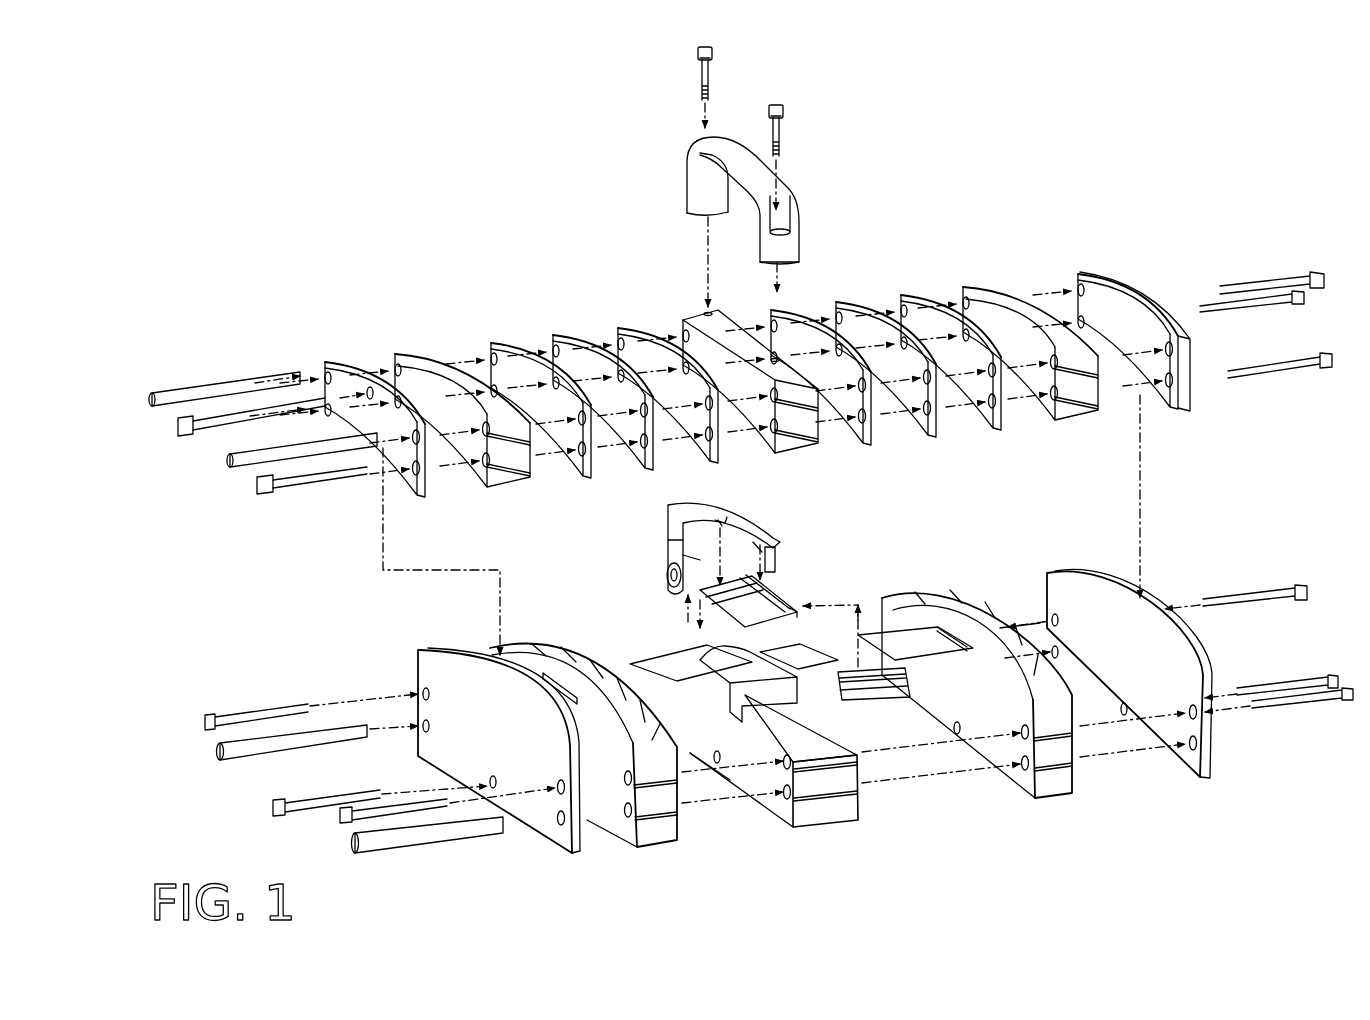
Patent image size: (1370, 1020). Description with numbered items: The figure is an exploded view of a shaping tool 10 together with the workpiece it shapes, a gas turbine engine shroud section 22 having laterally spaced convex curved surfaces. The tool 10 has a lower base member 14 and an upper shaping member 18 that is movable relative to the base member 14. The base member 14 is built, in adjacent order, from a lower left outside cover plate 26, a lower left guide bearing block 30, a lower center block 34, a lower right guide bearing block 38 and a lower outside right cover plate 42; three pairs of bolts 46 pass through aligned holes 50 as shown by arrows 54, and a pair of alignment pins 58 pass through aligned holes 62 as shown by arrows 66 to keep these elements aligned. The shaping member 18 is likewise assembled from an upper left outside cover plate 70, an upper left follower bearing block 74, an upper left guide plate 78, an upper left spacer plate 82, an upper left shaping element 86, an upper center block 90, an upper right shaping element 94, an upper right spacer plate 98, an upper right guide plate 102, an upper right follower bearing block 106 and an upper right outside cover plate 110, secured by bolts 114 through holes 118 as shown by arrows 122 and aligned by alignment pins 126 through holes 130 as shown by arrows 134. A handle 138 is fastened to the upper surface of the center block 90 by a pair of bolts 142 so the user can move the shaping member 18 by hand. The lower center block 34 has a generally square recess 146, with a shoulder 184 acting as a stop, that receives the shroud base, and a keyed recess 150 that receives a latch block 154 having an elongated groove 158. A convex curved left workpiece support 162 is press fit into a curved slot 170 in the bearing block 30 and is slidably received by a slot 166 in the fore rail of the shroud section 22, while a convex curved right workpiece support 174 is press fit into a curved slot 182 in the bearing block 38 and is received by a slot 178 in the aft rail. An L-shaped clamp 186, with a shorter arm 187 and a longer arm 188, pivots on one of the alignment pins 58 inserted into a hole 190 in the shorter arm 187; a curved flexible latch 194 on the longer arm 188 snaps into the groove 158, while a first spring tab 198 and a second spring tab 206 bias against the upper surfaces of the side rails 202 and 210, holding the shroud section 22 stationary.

The shaping tool 10 is at (975, 98).
The lower base member 14 is at (1015, 840).
The upper shaping member 18 is at (1085, 190).
The shroud section 22 is at (800, 588).
The lower left outside cover plate 26 is at (445, 665).
The lower left guide bearing block 30 is at (657, 848).
The lower center block 34 is at (840, 822).
The lower right guide bearing block 38 is at (1060, 800).
The lower outside right cover plate 42 is at (1200, 777).
The bolts 46 is at (265, 715).
The holes 50 is at (432, 698).
The arrows 54 is at (365, 698).
The alignment pins 58 is at (245, 752).
The holes 62 is at (432, 727).
The arrows 66 is at (1135, 760).
The upper left outside cover plate 70 is at (343, 372).
The upper left follower bearing block 74 is at (438, 350).
The upper left guide plate 78 is at (515, 355).
The upper left spacer plate 82 is at (575, 355).
The upper left shaping element 86 is at (642, 345).
The upper center block 90 is at (715, 340).
The upper right shaping element 94 is at (795, 330).
The upper right spacer plate 98 is at (858, 322).
The upper right guide plate 102 is at (920, 320).
The upper right follower bearing block 106 is at (990, 300).
The upper right outside cover plate 110 is at (1127, 296).
The bolts 114 is at (258, 480).
The holes 118 is at (365, 390).
The arrows 122 is at (383, 475).
The alignment pins 126 is at (225, 392).
The holes 130 is at (322, 372).
The arrows 134 is at (312, 380).
The handle 138 is at (745, 150).
The bolts 142 is at (698, 77).
The recess 146 is at (722, 690).
The keyed recess 150 is at (745, 712).
The latch block 154 is at (855, 712).
The groove 158 is at (838, 690).
The left workpiece support 162 is at (625, 658).
The slot 166 is at (715, 647).
The curved slot 170 is at (545, 680).
The right workpiece support 174 is at (940, 652).
The slot 178 is at (795, 608).
The curved slot 182 is at (955, 600).
The shoulder 184 is at (762, 668).
The clamp 186 is at (700, 506).
The shorter arm 187 is at (668, 524).
The longer arm 188 is at (760, 520).
The hole 190 is at (667, 578).
The latch 194 is at (785, 565).
The first spring tab 198 is at (712, 523).
The side rail 202 is at (703, 558).
The second spring tab 206 is at (762, 548).
The side rail 210 is at (702, 598).